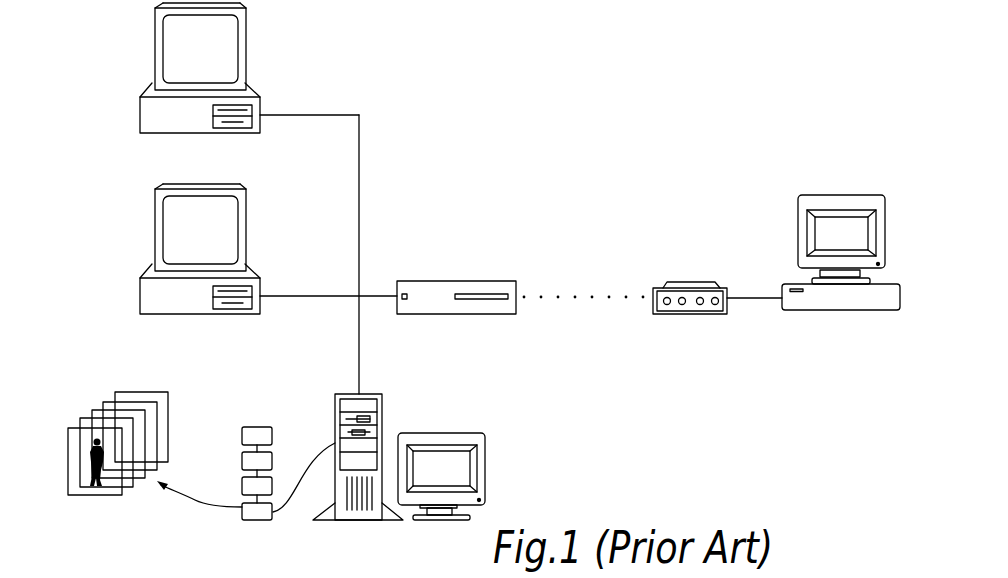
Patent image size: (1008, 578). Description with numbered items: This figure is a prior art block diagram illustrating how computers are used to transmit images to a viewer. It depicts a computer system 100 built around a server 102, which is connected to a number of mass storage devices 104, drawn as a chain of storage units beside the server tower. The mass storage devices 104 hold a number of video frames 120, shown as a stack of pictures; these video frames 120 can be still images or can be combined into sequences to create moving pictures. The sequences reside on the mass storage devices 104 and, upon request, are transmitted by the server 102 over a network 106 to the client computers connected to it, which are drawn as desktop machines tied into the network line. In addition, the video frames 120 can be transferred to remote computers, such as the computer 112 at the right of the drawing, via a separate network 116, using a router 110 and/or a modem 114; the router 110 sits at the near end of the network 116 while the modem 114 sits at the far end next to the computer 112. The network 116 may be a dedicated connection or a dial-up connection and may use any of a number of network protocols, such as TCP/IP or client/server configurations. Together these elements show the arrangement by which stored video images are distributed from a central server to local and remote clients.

The computer system 100 is at (842, 117).
The server 102 is at (382, 410).
The mass storage devices 104 is at (242, 457).
The network 106 is at (359, 347).
The router 110 is at (483, 314).
The computer 112 is at (798, 225).
The modem 114 is at (693, 315).
The network 116 is at (581, 297).
The video frames 120 is at (108, 497).